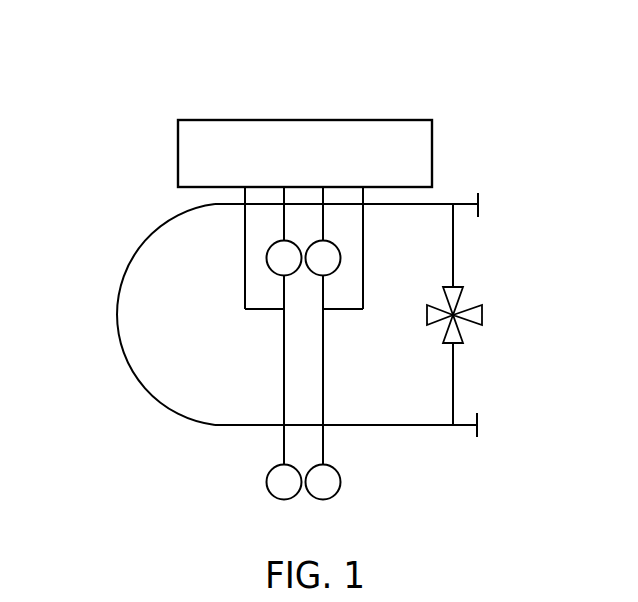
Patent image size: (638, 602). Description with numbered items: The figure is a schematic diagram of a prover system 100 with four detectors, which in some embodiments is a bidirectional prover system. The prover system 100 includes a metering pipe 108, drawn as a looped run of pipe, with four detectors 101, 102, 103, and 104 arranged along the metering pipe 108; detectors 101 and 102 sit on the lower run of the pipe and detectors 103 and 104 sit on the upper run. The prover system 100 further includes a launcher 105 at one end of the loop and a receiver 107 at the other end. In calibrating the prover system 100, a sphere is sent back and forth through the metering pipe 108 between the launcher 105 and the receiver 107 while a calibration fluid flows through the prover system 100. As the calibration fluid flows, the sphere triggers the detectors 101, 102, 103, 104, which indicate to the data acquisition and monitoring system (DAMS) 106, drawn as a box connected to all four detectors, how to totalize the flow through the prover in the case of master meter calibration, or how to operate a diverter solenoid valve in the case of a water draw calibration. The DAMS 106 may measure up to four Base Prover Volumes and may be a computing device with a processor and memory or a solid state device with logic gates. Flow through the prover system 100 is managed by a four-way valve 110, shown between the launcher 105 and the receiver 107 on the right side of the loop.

The prover system 100 is at (468, 112).
The detector 101 is at (341, 484).
The detector 102 is at (266, 484).
The detector 103 is at (266, 258).
The detector 104 is at (341, 258).
The launcher 105 is at (481, 430).
The data acquisition and monitoring system (DAMS) 106 is at (304, 120).
The receiver 107 is at (482, 210).
The metering pipe 108 is at (117, 315).
The four-way valve 110 is at (483, 318).